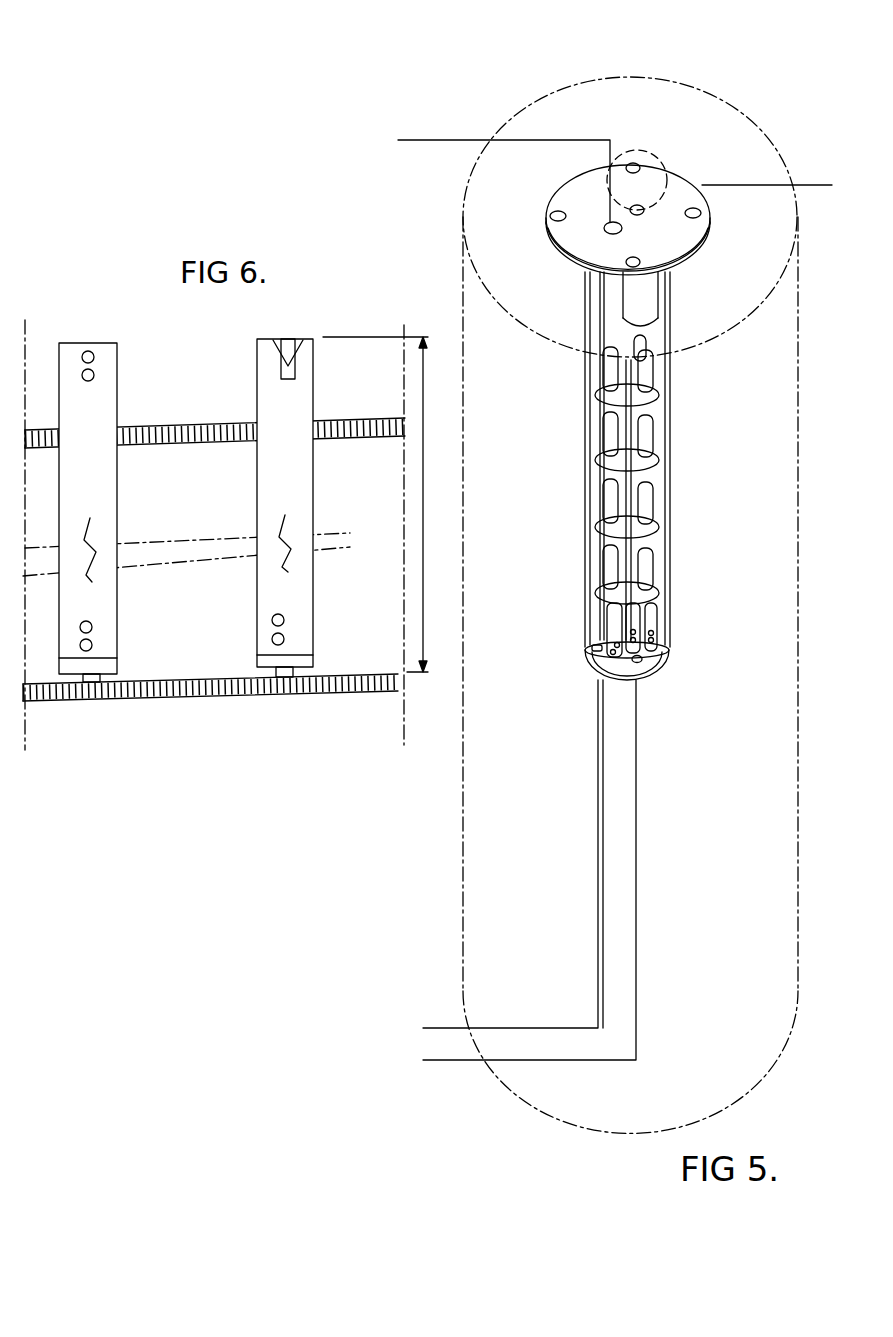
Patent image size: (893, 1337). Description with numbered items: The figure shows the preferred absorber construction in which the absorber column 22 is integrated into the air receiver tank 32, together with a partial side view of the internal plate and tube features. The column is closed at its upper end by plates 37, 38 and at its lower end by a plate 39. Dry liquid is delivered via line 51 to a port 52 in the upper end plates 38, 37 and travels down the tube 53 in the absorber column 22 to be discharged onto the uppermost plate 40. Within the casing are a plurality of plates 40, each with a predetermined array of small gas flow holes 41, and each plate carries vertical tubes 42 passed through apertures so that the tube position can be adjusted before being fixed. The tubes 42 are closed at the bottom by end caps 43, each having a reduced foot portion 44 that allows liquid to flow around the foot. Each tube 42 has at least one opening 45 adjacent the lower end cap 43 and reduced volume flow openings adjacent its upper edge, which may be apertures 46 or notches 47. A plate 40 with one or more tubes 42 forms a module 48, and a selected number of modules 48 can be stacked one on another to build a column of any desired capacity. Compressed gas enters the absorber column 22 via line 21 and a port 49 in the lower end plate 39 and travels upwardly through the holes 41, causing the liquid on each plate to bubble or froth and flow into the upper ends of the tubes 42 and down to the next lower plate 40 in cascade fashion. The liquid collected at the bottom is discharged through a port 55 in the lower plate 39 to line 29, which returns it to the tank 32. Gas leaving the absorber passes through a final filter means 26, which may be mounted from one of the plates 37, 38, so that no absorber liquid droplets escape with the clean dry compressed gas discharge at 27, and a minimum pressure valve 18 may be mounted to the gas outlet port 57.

In FIG. 5, the minimum pressure valve 18 is at (696, 141).
In FIG. 5, the line 21 is at (513, 854).
In FIG. 5, the absorber column 22 is at (647, 490).
In FIG. 5, the final filter means 26 is at (676, 299).
In FIG. 5, the clean dry compressed gas discharge 27 is at (767, 139).
In FIG. 5, the line 29 is at (560, 870).
In FIG. 5, the air receiver tank 32 is at (583, 605).
In FIG. 5, the plate 37 is at (655, 255).
In FIG. 5, the plate 38 is at (656, 217).
In FIG. 5, the plate 39 is at (666, 656).
In FIG. 6, the plate 40 is at (214, 555).
In FIG. 6, the gas flow holes 41 is at (214, 551).
In FIG. 6, the vertical tubes 42 is at (220, 506).
In FIG. 6, the end caps 43 is at (219, 649).
In FIG. 6, the reduced foot portion 44 is at (233, 669).
In FIG. 6, the opening 45 is at (229, 616).
In FIG. 6, the apertures 46 is at (122, 334).
In FIG. 6, the notches 47 is at (300, 328).
In FIG. 6, the modules 48 is at (415, 504).
In FIG. 5, the port 49 is at (557, 671).
In FIG. 5, the line 51 is at (510, 133).
In FIG. 5, the port 52 is at (562, 193).
In FIG. 5, the tube 53 is at (562, 456).
In FIG. 5, the port 55 is at (675, 683).
In FIG. 5, the gas outlet port 57 is at (694, 149).